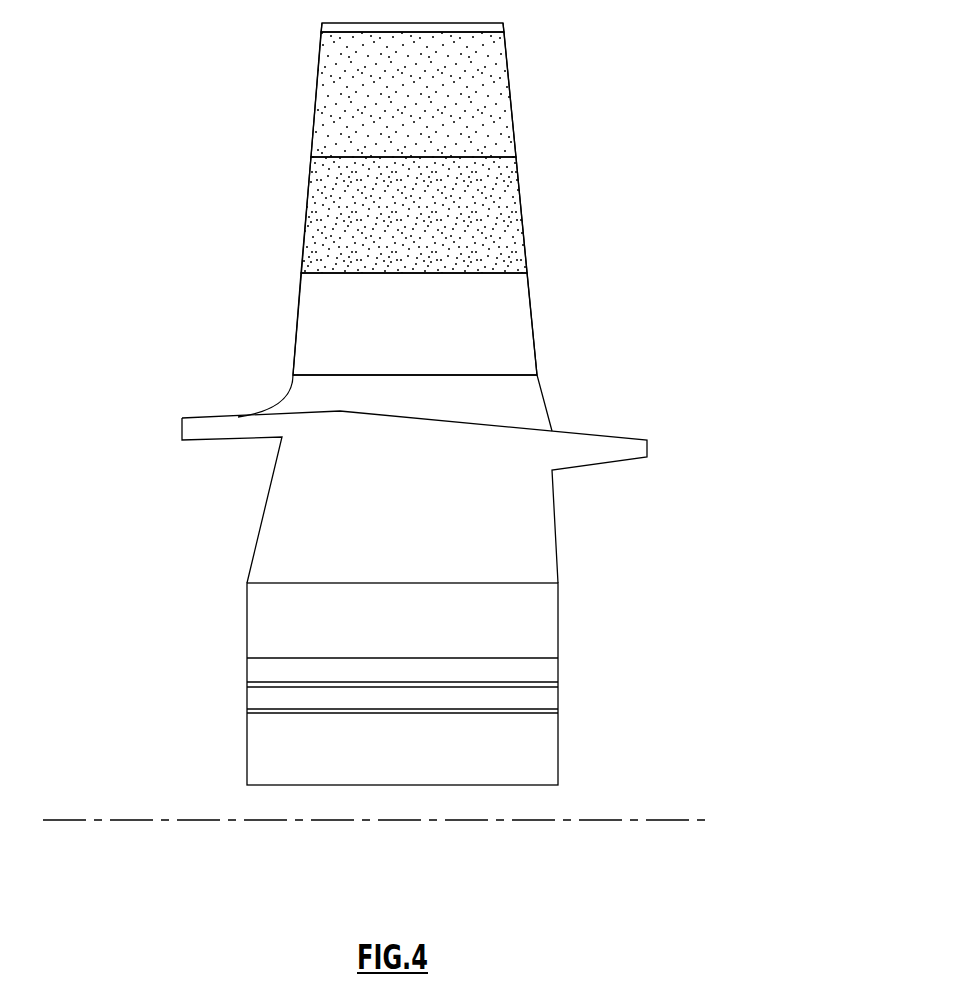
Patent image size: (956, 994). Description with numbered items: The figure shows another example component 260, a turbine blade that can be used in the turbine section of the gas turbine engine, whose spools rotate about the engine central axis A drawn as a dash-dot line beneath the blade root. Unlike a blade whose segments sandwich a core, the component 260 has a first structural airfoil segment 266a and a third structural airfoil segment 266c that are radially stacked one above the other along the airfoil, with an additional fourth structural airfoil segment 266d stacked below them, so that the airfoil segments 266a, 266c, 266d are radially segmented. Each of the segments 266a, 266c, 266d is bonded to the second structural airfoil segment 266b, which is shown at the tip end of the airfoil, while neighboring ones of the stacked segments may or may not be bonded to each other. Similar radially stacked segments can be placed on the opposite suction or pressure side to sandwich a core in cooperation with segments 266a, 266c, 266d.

The component 260 is at (255, 275).
The first structural airfoil segment 266a is at (500, 101).
The second structural airfoil segment 266b is at (504, 23).
The third structural airfoil segment 266c is at (510, 219).
The fourth structural airfoil segment 266d is at (523, 327).
The engine central axis A is at (63, 820).